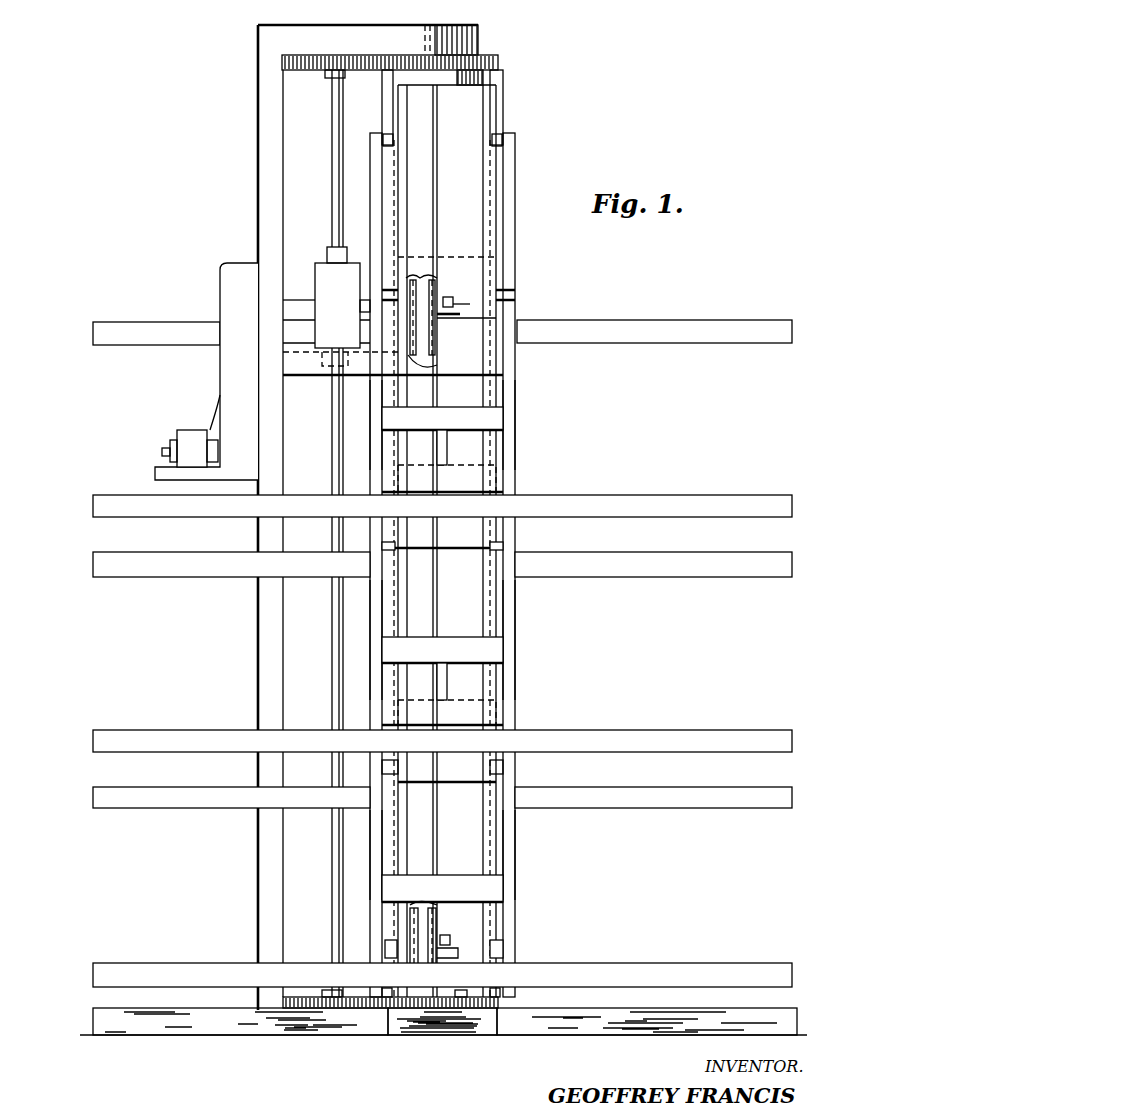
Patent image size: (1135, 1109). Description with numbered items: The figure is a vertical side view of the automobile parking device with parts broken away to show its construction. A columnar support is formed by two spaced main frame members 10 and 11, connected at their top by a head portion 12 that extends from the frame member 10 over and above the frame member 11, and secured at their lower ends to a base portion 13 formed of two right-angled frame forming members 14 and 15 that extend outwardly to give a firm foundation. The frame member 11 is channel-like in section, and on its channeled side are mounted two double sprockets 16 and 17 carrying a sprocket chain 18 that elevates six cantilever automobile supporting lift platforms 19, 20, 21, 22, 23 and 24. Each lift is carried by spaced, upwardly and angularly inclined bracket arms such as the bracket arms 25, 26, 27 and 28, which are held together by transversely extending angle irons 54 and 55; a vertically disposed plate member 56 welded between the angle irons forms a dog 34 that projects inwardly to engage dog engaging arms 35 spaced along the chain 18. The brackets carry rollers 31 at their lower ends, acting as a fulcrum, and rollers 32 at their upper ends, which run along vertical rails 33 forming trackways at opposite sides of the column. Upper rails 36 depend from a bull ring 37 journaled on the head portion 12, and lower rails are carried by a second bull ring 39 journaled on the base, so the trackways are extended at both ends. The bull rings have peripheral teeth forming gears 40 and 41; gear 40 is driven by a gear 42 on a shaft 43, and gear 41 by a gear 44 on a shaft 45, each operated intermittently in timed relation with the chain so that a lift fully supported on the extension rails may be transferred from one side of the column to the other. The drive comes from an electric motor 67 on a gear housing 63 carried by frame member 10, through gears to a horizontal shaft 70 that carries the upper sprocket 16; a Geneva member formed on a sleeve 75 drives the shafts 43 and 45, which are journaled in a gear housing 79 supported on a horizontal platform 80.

The frame member 10 is at (258, 167).
The frame member 11 is at (432, 156).
The head portion 12 is at (470, 41).
The base portion 13 is at (268, 1035).
The frame forming member 14 is at (417, 1030).
The frame forming member 15 is at (575, 1036).
The double sprocket 16 is at (440, 300).
The double sprocket 17 is at (440, 940).
The sprocket chain 18 is at (420, 358).
The lift platform 19 is at (155, 965).
The lift platform 20 is at (163, 730).
The lift platform 21 is at (132, 495).
The lift platform 22 is at (605, 322).
The lift platform 23 is at (605, 553).
The lift platform 24 is at (605, 788).
The bracket arm 25 is at (378, 852).
The bracket arm 26 is at (375, 612).
The bracket arm 27 is at (378, 424).
The bracket arm 28 is at (370, 195).
The roller 31 is at (500, 300).
The roller 32 is at (388, 137).
The rail 33 is at (390, 603).
The dog 34 is at (453, 307).
The dog engaging arm 35 is at (437, 318).
The rail 36 is at (382, 103).
The bull ring 37 is at (453, 88).
The bull ring 39 is at (498, 1000).
The gear 40 is at (498, 64).
The gear 41 is at (460, 1008).
The gear 42 is at (302, 70).
The shaft 43 is at (332, 158).
The gear 44 is at (312, 995).
The shaft 45 is at (333, 438).
The angle iron 54 is at (452, 255).
The angle iron 55 is at (490, 300).
The plate member 56 is at (447, 440).
The gear housing 63 is at (222, 292).
The electric motor 67 is at (186, 430).
The shaft 70 is at (360, 305).
The sleeve 75 is at (302, 306).
The gear housing 79 is at (320, 282).
The horizontal platform 80 is at (303, 372).